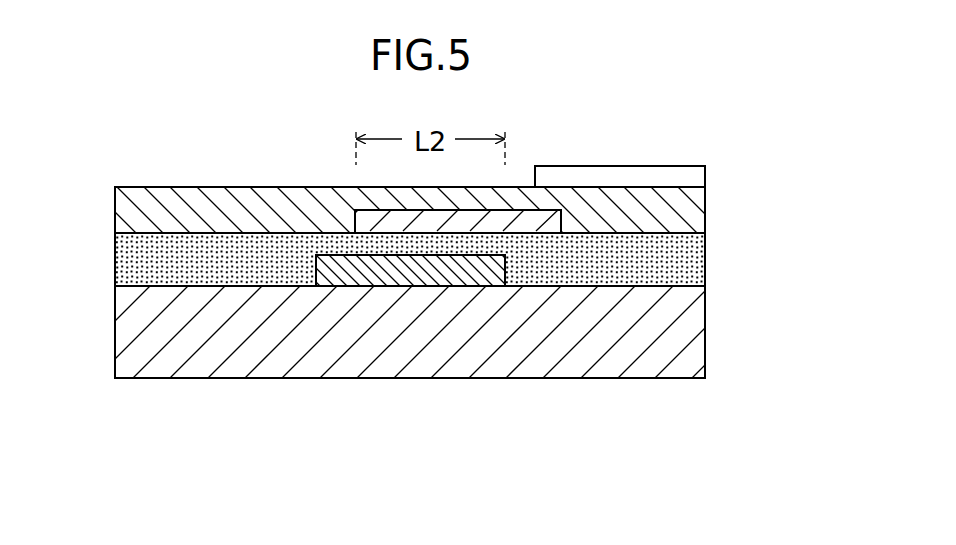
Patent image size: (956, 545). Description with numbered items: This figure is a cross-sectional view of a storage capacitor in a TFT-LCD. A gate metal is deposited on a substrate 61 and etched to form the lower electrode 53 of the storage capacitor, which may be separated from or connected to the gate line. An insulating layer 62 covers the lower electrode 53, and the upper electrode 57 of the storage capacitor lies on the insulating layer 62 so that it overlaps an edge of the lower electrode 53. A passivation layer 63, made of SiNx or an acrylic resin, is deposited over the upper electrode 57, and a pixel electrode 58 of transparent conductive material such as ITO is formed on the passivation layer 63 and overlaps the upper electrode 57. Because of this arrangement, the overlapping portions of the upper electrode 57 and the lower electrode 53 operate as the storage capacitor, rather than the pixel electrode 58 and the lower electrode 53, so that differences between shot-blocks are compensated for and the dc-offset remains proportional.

The lower electrode 53 is at (405, 286).
The upper electrode 57 is at (530, 225).
The pixel electrode 58 is at (698, 178).
The substrate 61 is at (698, 335).
The insulating layer 62 is at (695, 262).
The passivation layer 63 is at (698, 208).